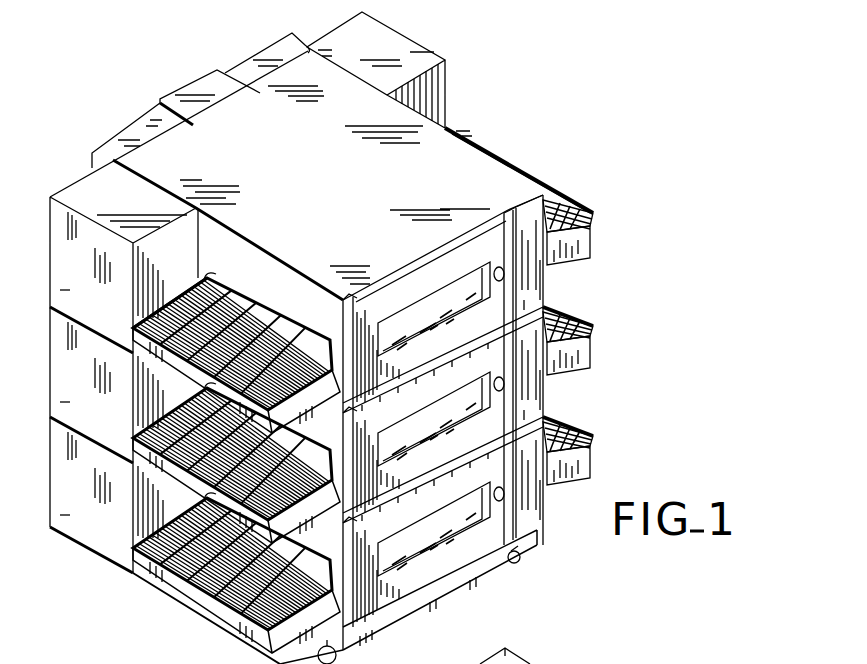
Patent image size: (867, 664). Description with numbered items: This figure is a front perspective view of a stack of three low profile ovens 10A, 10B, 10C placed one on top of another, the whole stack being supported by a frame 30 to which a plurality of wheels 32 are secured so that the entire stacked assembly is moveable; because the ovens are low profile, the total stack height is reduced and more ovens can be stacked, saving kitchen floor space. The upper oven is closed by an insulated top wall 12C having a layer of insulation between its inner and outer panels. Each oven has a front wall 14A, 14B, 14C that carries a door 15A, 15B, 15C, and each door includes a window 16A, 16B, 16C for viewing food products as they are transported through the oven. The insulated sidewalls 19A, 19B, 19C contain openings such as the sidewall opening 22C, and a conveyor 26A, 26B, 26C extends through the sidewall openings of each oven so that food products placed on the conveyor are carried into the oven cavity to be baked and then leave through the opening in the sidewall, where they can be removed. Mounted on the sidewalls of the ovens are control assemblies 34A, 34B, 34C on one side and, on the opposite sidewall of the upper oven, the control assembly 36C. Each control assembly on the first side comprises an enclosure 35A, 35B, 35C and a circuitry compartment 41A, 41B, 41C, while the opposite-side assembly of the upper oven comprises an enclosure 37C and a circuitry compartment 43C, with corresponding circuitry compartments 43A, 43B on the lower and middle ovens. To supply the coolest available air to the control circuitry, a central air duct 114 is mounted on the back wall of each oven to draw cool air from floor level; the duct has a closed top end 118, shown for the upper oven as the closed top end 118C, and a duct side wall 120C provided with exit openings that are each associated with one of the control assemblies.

The low profile oven 10A is at (632, 451).
The low profile oven 10B is at (630, 310).
The low profile oven 10C is at (547, 155).
The top wall 12C is at (318, 169).
The front wall 14A is at (531, 480).
The front wall 14B is at (540, 376).
The front wall 14C is at (545, 272).
The door 15A is at (476, 548).
The door 15B is at (478, 416).
The door 15C is at (420, 300).
The window 16A is at (450, 555).
The window 16B is at (470, 404).
The window 16C is at (410, 322).
The sidewall 19A is at (338, 556).
The sidewall 19B is at (338, 444).
The sidewall 19C is at (292, 295).
The sidewall opening 22C is at (206, 276).
The conveyor 26A is at (186, 540).
The conveyor 26B is at (190, 430).
The conveyor 26C is at (192, 300).
The frame 30 is at (440, 588).
The wheels 32 is at (522, 556).
The control assembly 34A is at (48, 487).
The control assembly 34B is at (48, 373).
The control assembly 34C is at (48, 253).
The enclosure 35A is at (106, 517).
The enclosure 35B is at (106, 402).
The enclosure 35C is at (104, 274).
The control assembly 36C is at (398, 28).
The enclosure 37C is at (378, 53).
The circuitry compartment 41A is at (232, 612).
The circuitry compartment 41B is at (162, 462).
The circuitry compartment 41C is at (160, 352).
The circuitry compartment 43A is at (582, 462).
The circuitry compartment 43B is at (582, 352).
The circuitry compartment 43C is at (580, 242).
The central air duct 114 is at (170, 94).
The closed top end 118 is at (208, 90).
The closed top end 118C is at (150, 140).
The duct side wall 120C is at (278, 60).